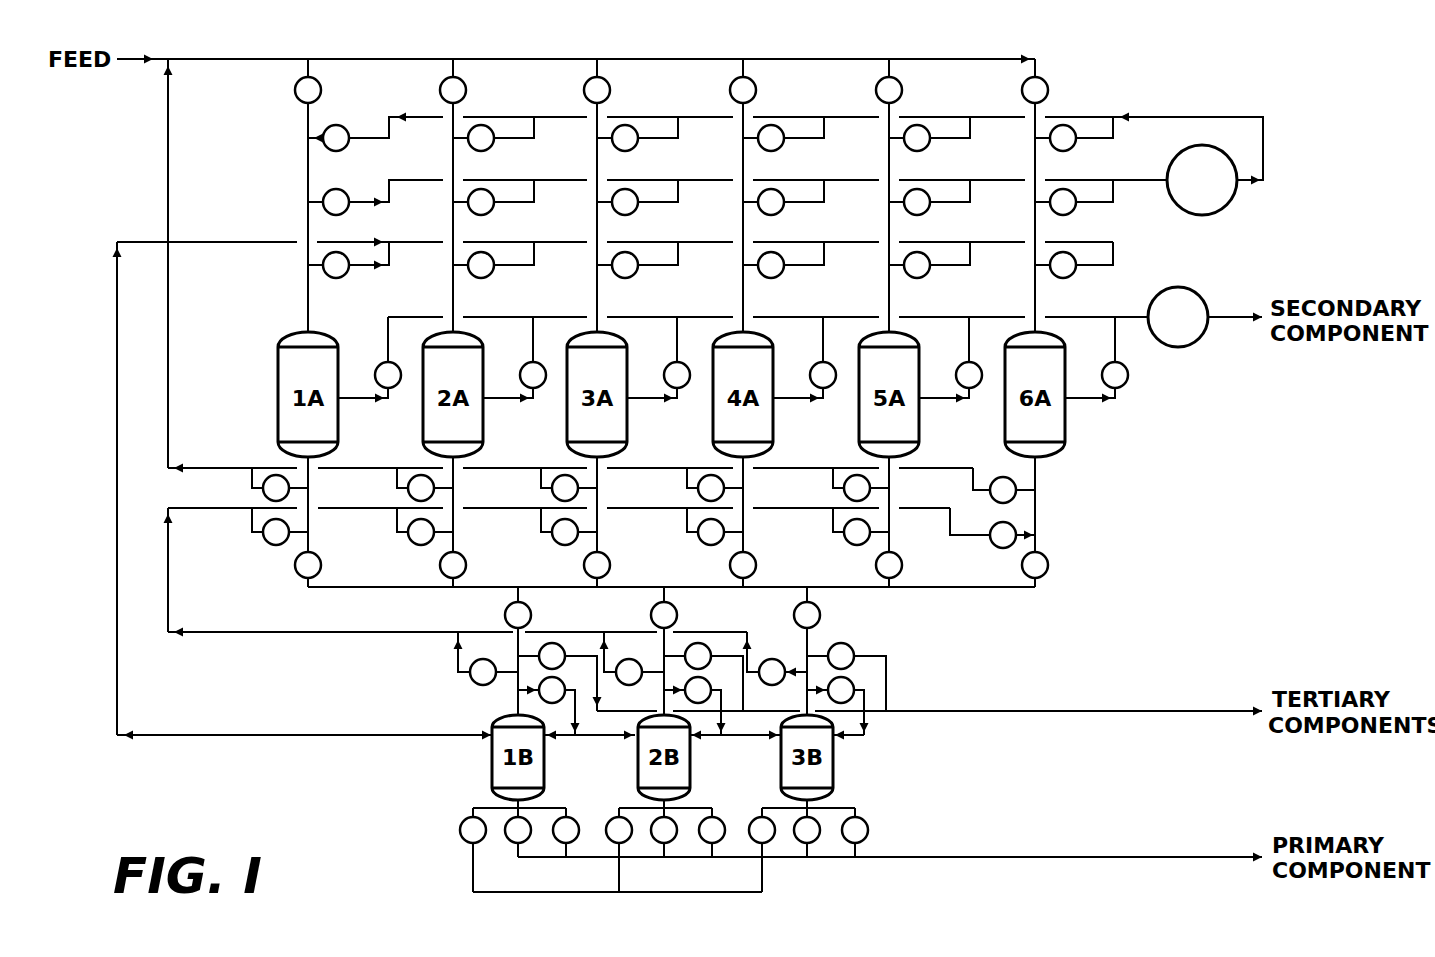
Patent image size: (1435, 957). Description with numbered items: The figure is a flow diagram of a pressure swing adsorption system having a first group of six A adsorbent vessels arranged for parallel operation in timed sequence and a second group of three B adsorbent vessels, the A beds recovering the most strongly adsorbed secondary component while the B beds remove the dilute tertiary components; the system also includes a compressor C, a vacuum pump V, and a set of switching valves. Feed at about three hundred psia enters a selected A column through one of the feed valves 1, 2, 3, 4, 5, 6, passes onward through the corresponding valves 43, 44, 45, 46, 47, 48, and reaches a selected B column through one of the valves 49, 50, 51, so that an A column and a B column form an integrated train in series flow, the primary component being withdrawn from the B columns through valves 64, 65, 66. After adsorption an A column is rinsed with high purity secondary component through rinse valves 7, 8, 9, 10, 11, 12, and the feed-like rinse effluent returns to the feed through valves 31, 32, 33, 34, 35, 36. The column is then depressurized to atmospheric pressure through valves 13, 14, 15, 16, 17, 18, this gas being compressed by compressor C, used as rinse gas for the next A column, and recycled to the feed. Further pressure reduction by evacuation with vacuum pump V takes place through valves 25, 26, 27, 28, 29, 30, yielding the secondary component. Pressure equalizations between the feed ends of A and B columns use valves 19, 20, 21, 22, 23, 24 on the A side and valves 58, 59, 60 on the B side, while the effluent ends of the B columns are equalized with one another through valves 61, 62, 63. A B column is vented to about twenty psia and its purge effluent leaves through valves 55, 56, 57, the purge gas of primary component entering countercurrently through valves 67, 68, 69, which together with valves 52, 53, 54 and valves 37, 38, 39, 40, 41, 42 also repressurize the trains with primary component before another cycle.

The feed valve 1 is at (317, 90).
The feed valve 2 is at (462, 90).
The feed valve 3 is at (606, 90).
The feed valve 4 is at (752, 90).
The feed valve 5 is at (898, 90).
The feed valve 6 is at (1044, 90).
The rinse valve 7 is at (336, 150).
The rinse valve 8 is at (481, 150).
The rinse valve 9 is at (625, 150).
The rinse valve 10 is at (771, 150).
The rinse valve 11 is at (917, 150).
The rinse valve 12 is at (1063, 150).
The depressurization valve 13 is at (336, 214).
The depressurization valve 14 is at (481, 214).
The depressurization valve 15 is at (625, 214).
The depressurization valve 16 is at (771, 214).
The depressurization valve 17 is at (917, 214).
The depressurization valve 18 is at (1063, 214).
The feed-end equalization valve 19 is at (336, 277).
The feed-end equalization valve 20 is at (481, 277).
The feed-end equalization valve 21 is at (625, 277).
The feed-end equalization valve 22 is at (771, 277).
The feed-end equalization valve 23 is at (917, 277).
The feed-end equalization valve 24 is at (1063, 277).
The evacuation valve 25 is at (377, 363).
The evacuation valve 26 is at (522, 363).
The evacuation valve 27 is at (666, 363).
The evacuation valve 28 is at (812, 363).
The evacuation valve 29 is at (958, 363).
The evacuation valve 30 is at (1104, 363).
The rinse effluent valve 31 is at (256, 490).
The rinse effluent valve 32 is at (392, 490).
The rinse effluent valve 33 is at (539, 490).
The rinse effluent valve 34 is at (687, 490).
The rinse effluent valve 35 is at (832, 490).
The rinse effluent valve 36 is at (990, 498).
The repressurization valve 37 is at (260, 539).
The repressurization valve 38 is at (403, 539).
The repressurization valve 39 is at (544, 539).
The repressurization valve 40 is at (694, 540).
The repressurization valve 41 is at (840, 540).
The repressurization valve 42 is at (982, 543).
The column outlet valve 43 is at (324, 565).
The column outlet valve 44 is at (469, 565).
The column outlet valve 45 is at (613, 565).
The column outlet valve 46 is at (759, 565).
The column outlet valve 47 is at (905, 565).
The column outlet valve 48 is at (1051, 565).
The B-column feed valve 49 is at (536, 615).
The B-column feed valve 50 is at (682, 615).
The B-column feed valve 51 is at (825, 615).
The repressurization valve 52 is at (502, 663).
The repressurization valve 53 is at (646, 663).
The repressurization valve 54 is at (789, 663).
The vent and purge outlet valve 55 is at (560, 645).
The vent and purge outlet valve 56 is at (706, 645).
The vent and purge outlet valve 57 is at (849, 645).
The feed-end equalization valve 58 is at (560, 679).
The feed-end equalization valve 59 is at (706, 679).
The feed-end equalization valve 60 is at (849, 679).
The effluent-end equalization valve 61 is at (463, 819).
The effluent-end equalization valve 62 is at (607, 838).
The effluent-end equalization valve 63 is at (750, 838).
The primary component withdrawal valve 64 is at (508, 840).
The primary component withdrawal valve 65 is at (653, 838).
The primary component withdrawal valve 66 is at (796, 838).
The purge and repressurization inlet valve 67 is at (573, 812).
The purge and repressurization inlet valve 68 is at (719, 812).
The purge and repressurization inlet valve 69 is at (862, 812).
The compressor C is at (1222, 208).
The vacuum pump V is at (1194, 343).